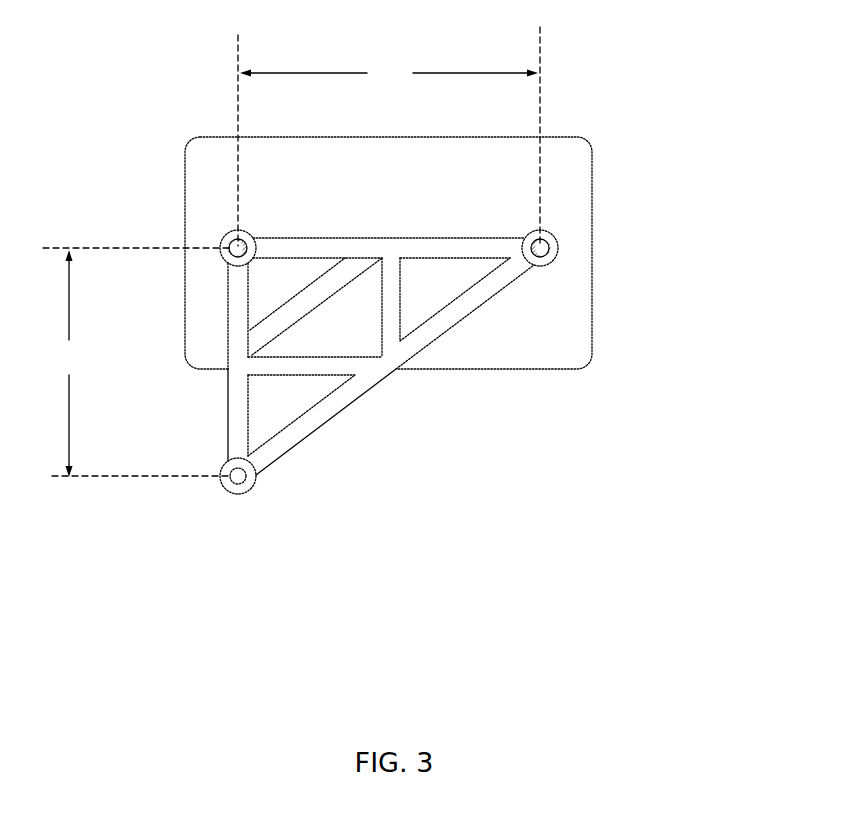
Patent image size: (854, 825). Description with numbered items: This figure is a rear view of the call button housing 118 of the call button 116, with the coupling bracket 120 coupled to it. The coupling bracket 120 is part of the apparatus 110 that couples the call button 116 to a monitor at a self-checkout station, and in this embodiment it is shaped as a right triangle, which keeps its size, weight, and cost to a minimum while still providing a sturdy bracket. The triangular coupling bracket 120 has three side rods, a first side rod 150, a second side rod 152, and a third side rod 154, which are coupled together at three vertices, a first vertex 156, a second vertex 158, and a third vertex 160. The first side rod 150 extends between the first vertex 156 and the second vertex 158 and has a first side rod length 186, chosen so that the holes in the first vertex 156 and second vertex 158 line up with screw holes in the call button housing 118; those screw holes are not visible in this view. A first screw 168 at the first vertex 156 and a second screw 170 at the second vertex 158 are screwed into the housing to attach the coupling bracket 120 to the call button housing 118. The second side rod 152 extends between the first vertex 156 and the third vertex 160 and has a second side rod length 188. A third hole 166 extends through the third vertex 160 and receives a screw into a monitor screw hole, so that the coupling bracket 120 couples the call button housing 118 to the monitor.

The apparatus 110 is at (658, 79).
The call button 116 is at (610, 181).
The call button housing 118 is at (310, 148).
The coupling bracket 120 is at (395, 372).
The first side rod 150 is at (385, 248).
The second side rod 152 is at (228, 416).
The third side rod 154 is at (385, 373).
The first vertex 156 is at (225, 247).
The second vertex 158 is at (551, 238).
The third vertex 160 is at (239, 490).
The third hole 166 is at (243, 478).
The first screw 168 is at (233, 246).
The second screw 170 is at (552, 253).
The first side rod length 186 is at (389, 73).
The second side rod length 188 is at (66, 363).